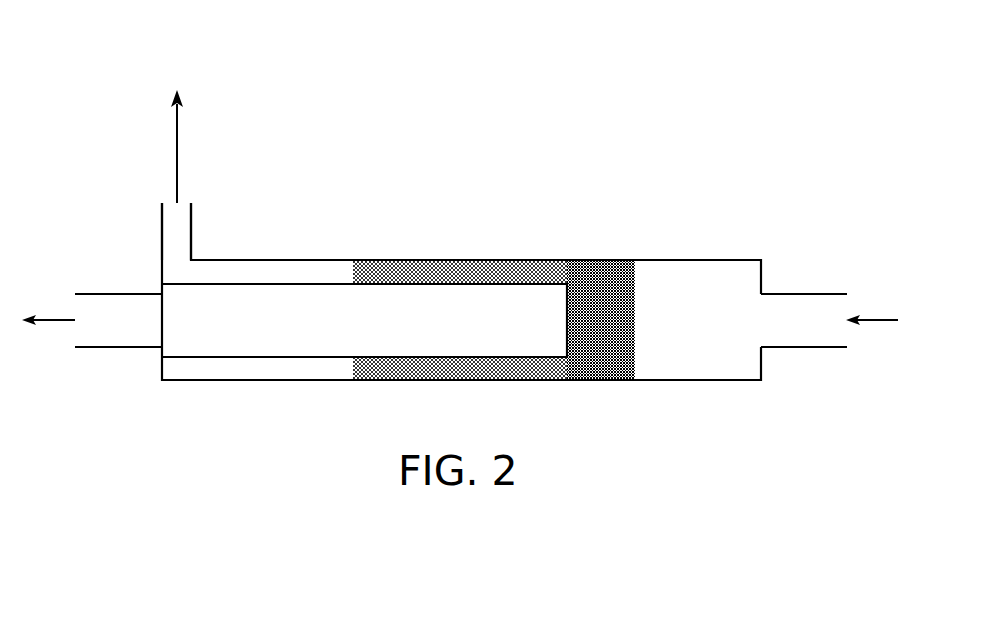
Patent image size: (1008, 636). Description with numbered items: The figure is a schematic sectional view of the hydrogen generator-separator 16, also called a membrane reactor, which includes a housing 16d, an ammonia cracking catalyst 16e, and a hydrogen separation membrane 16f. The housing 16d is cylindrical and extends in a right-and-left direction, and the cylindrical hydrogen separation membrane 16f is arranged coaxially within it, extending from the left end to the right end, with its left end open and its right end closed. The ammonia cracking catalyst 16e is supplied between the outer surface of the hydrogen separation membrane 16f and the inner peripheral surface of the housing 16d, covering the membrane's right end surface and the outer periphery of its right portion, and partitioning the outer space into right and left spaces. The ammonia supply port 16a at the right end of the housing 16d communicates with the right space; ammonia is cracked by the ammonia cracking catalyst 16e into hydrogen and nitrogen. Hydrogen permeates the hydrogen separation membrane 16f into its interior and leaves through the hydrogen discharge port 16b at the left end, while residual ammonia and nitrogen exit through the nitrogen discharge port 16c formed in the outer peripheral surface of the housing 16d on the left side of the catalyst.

The hydrogen generator-separator 16 is at (67, 68).
The ammonia supply port 16a is at (845, 308).
The hydrogen discharge port 16b is at (75, 307).
The nitrogen discharge port 16c is at (167, 203).
The housing 16d is at (687, 260).
The ammonia cracking catalyst 16e is at (598, 277).
The hydrogen separation membrane 16f is at (310, 282).